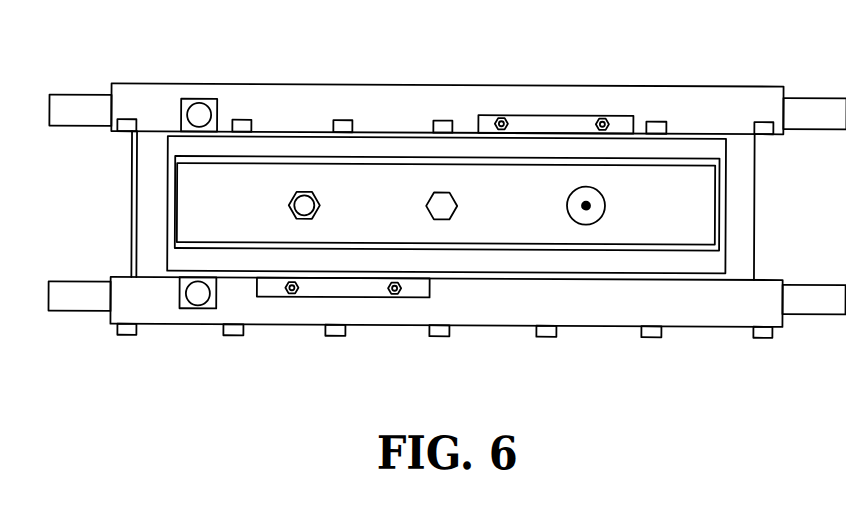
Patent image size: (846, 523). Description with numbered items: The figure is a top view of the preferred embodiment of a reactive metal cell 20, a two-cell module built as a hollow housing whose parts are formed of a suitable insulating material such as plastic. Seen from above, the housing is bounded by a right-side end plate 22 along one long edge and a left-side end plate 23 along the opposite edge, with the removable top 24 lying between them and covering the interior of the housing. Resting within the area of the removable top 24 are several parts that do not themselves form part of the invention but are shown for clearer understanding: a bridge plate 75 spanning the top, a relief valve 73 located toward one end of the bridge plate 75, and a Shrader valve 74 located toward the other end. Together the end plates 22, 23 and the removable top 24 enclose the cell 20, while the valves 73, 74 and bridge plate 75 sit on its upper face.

The reactive metal cell 20 is at (768, 60).
The end plate (right side) 22 is at (628, 85).
The end plate (left side) 23 is at (696, 326).
The removable top 24 is at (702, 266).
The relief valve 73 is at (574, 192).
The Shrader valve 74 is at (295, 200).
The bridge plate 75 is at (707, 215).